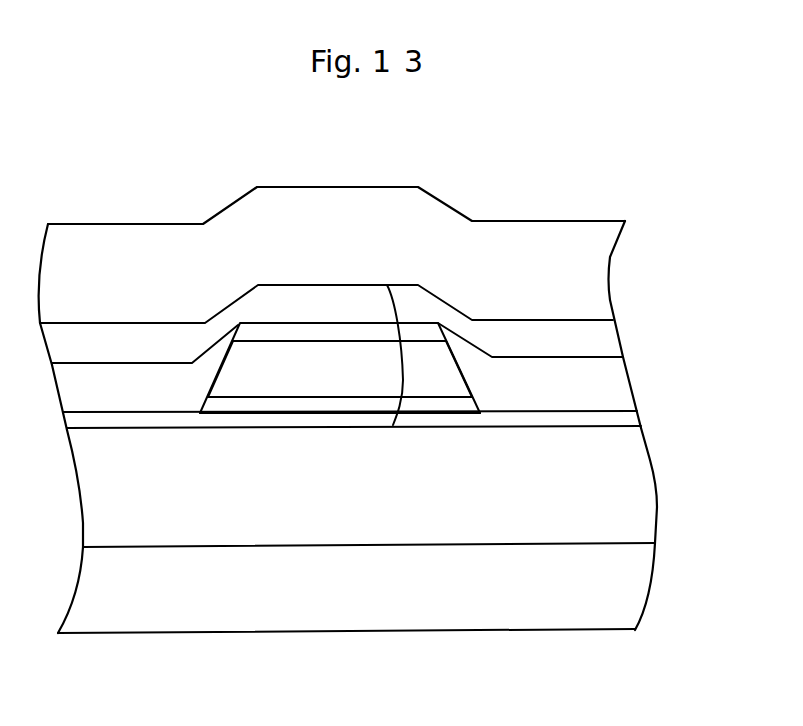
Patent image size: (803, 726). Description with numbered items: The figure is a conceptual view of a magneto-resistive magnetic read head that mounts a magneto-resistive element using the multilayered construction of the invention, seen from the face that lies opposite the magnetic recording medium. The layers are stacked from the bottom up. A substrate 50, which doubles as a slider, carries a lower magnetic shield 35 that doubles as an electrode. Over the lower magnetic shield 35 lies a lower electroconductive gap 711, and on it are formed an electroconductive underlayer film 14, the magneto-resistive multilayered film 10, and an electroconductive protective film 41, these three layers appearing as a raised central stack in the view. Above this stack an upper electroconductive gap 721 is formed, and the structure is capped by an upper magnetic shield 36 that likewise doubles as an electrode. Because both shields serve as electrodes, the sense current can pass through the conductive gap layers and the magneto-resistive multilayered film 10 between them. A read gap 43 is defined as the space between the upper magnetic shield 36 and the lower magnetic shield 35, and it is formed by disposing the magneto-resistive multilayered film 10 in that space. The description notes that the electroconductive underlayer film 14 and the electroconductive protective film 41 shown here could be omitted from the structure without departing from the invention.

The upper magnetic shield 36 is at (613, 257).
The upper electroconductive gap 721 is at (602, 347).
The electroconductive protective film 41 is at (323, 332).
The magneto-resistive multilayered film 10 is at (453, 370).
The electroconductive underlayer film 14 is at (298, 403).
The read gap 43 is at (402, 380).
The lower electroconductive gap 711 is at (610, 419).
The lower magnetic shield 35 is at (617, 488).
The substrate 50 is at (617, 567).